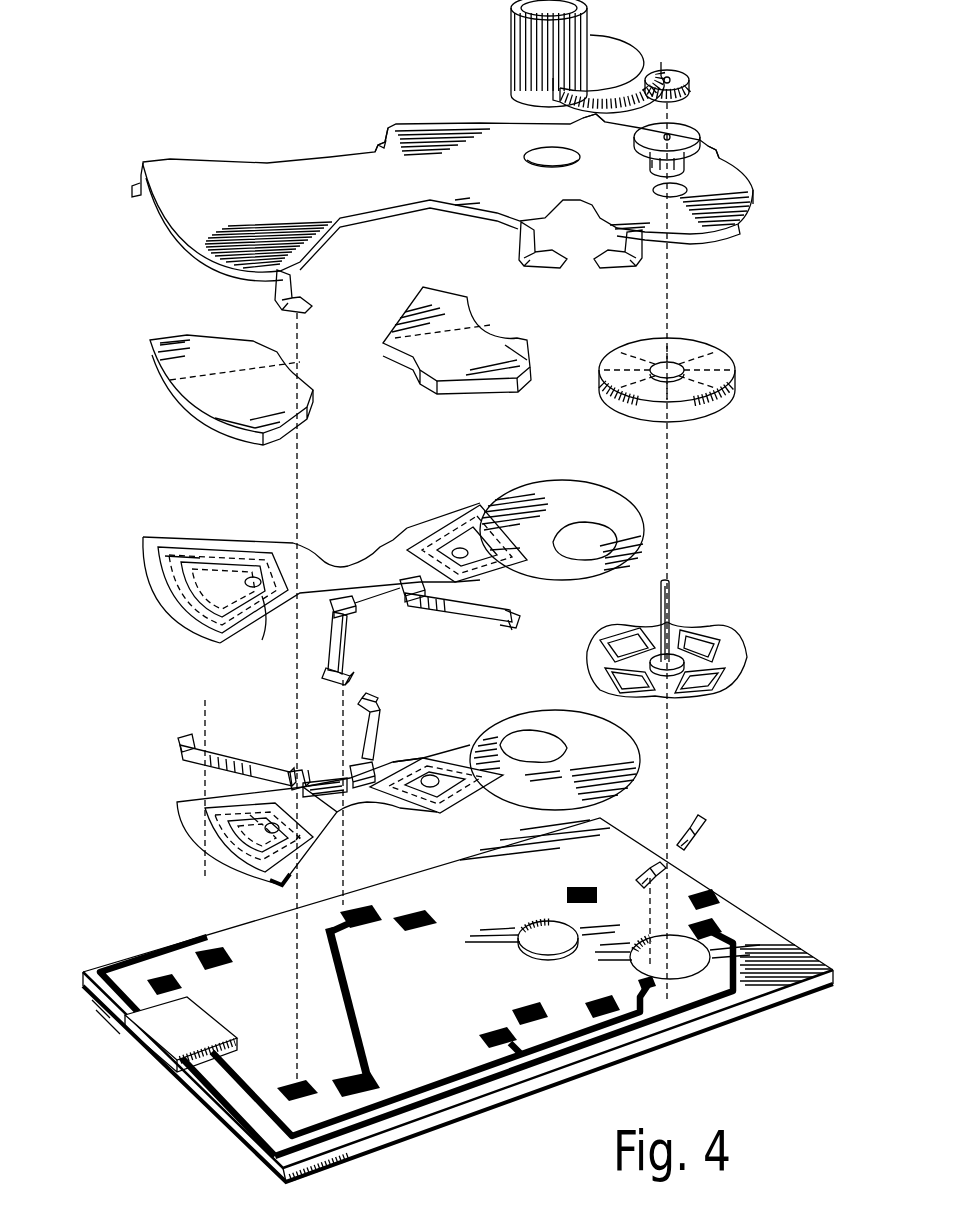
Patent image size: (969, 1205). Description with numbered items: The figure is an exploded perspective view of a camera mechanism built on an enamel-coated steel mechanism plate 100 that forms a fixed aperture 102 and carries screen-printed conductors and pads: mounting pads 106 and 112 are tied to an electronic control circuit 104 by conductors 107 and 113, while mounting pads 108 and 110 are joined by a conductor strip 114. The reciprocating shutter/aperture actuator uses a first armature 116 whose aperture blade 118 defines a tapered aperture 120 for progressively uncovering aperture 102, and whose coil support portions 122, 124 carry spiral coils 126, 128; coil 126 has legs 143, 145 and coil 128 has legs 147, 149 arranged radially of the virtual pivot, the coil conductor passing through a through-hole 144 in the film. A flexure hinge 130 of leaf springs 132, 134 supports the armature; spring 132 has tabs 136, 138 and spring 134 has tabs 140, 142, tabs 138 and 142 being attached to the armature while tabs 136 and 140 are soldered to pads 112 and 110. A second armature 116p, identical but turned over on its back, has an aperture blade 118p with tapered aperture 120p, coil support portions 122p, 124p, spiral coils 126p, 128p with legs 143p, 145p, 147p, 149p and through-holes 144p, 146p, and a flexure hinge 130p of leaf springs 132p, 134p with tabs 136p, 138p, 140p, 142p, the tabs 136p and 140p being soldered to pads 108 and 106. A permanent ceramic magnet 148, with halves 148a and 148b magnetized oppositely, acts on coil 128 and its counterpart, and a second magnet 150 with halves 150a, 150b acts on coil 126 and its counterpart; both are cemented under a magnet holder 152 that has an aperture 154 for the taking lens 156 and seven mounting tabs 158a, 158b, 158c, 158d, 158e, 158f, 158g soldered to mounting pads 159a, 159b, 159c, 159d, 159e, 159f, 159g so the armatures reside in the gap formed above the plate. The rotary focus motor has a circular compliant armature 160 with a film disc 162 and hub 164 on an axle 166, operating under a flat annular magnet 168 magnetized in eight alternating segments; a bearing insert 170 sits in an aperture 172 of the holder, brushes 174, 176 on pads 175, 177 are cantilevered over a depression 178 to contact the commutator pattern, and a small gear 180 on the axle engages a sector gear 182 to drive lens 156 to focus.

The mechanism plate 100 is at (738, 910).
The aperture 102 is at (565, 924).
The electronic control circuit 104 is at (200, 1015).
The mounting pad 106 is at (488, 1030).
The conductor 107 is at (440, 1085).
The mounting pad 108 is at (340, 1080).
The mounting pad 110 is at (355, 928).
The mounting pad 112 is at (218, 968).
The conductor 113 is at (130, 950).
The conductor strip 114 is at (355, 1010).
The first armature 116 is at (358, 826).
The aperture blade 118 is at (597, 732).
The tapered aperture 120 is at (528, 740).
The coil support portion 122 is at (432, 748).
The coil support portion 124 is at (185, 800).
The spiral coil 126 is at (495, 772).
The spiral coil 128 is at (195, 838).
The flexure hinge 130 is at (280, 726).
The leaf spring 132 is at (190, 758).
The leaf spring 134 is at (375, 735).
The tab 136 is at (190, 737).
The tab 138 is at (302, 776).
The tab 140 is at (362, 710).
The tab 142 is at (360, 785).
The leg 143 is at (385, 760).
The through-hole 144 is at (262, 840).
The leg 145 is at (440, 808).
The leg 147 is at (252, 815).
The permanent ceramic magnet 148 is at (150, 399).
The magnet half 148a is at (178, 345).
The magnet half 148b is at (222, 418).
The leg 149 is at (300, 840).
The permanent ceramic magnet 150 is at (512, 312).
The magnet half 150a is at (515, 345).
The magnet half 150b is at (430, 300).
The magnet holder 152 is at (203, 165).
The aperture 154 is at (528, 162).
The taking lens 156 is at (525, 42).
The mounting tab 158a is at (136, 185).
The mounting tab 158b is at (305, 294).
The mounting tab 158c is at (377, 143).
The mounting tab 158d is at (522, 258).
The mounting tab 158e is at (594, 116).
The mounting tab 158f is at (720, 156).
The mounting tab 158g is at (600, 268).
The mounting pad 159a is at (150, 975).
The mounting pad 159b is at (278, 1092).
The mounting pad 159c is at (400, 918).
The mounting pad 159d is at (512, 1008).
The mounting pad 159e is at (567, 898).
The mounting pad 159f is at (712, 892).
The mounting pad 159g is at (590, 1003).
The circular compliant armature 160 is at (748, 634).
The film disc 162 is at (745, 675).
The hub 164 is at (660, 618).
The axle 166 is at (672, 600).
The annular magnet 168 is at (733, 355).
The bearing insert 170 is at (690, 134).
The aperture 172 is at (680, 189).
The brush 174 is at (640, 870).
The mounting pad 175 is at (660, 990).
The brush 176 is at (704, 826).
The mounting pad 177 is at (708, 926).
The depression 178 is at (685, 985).
The small gear 180 is at (670, 72).
The sector gear 182 is at (612, 40).
The second armature 116p is at (353, 550).
The aperture blade 118p is at (575, 490).
The tapered aperture 120p is at (600, 532).
The coil support portion 122p is at (462, 508).
The coil support portion 124p is at (148, 540).
The spiral coil 126p is at (475, 530).
The spiral coil 128p is at (160, 592).
The flexure hinge 130p is at (368, 646).
The leaf spring 132p is at (336, 636).
The leaf spring 134p is at (480, 625).
The tab 136p is at (350, 672).
The tab 138p is at (352, 596).
The tab 140p is at (512, 628).
The tab 142p is at (410, 600).
The leg 143p is at (505, 588).
The through-hole 144p is at (248, 582).
The leg 145p is at (440, 520).
The through-hole 146p is at (500, 538).
The leg 147p is at (270, 620).
The leg 149p is at (205, 570).